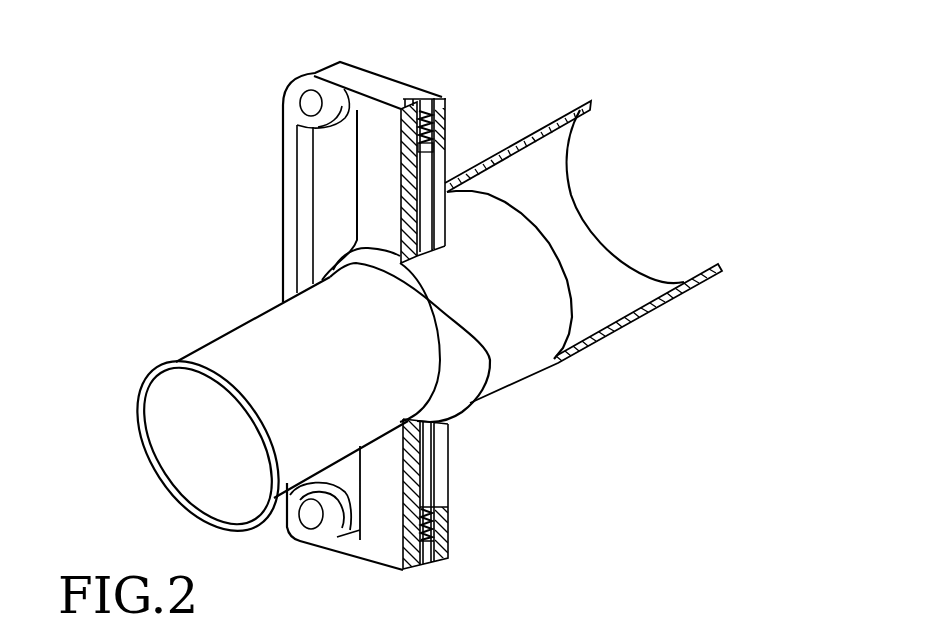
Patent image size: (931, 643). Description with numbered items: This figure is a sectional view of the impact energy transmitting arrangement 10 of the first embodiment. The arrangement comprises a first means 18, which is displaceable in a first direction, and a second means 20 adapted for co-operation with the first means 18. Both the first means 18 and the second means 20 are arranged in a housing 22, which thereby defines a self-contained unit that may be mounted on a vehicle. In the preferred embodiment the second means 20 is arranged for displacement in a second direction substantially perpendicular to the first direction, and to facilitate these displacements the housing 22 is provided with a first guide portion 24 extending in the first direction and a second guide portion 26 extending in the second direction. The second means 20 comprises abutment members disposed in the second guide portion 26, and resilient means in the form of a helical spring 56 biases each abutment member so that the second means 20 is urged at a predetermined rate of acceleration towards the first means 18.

The impact energy transmitting arrangement 10 is at (199, 168).
The first means 18 is at (254, 313).
The second means 20 is at (446, 192).
The housing 22 is at (328, 67).
The first guide portion 24 is at (553, 193).
The second guide portion 26 is at (428, 548).
The helical spring 56 is at (432, 137).